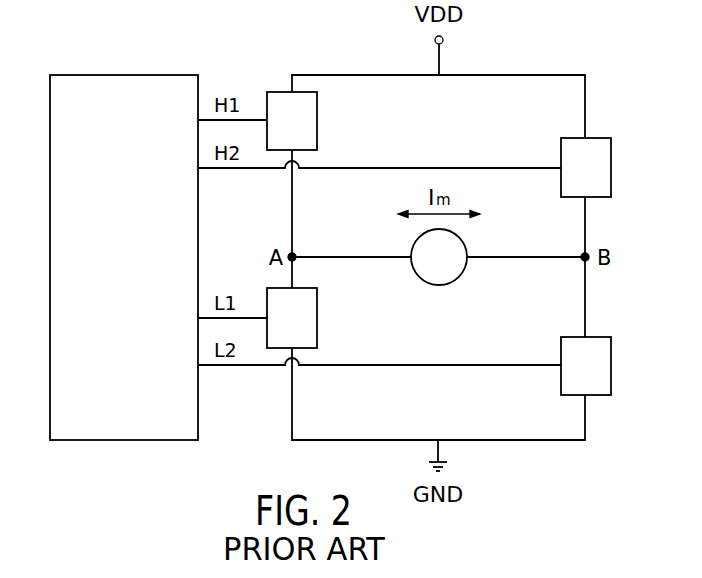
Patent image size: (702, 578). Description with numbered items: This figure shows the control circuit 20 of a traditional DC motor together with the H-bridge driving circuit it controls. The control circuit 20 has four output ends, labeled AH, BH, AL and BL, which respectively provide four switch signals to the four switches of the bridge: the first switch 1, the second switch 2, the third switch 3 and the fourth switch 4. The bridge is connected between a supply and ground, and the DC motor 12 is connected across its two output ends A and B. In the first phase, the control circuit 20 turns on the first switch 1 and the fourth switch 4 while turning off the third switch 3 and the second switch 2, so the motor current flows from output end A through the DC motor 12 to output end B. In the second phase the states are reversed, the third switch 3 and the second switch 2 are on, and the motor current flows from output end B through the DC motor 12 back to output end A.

The control circuit 20 is at (121, 75).
The DC motor 12 is at (438, 257).
The switch Q1 1 is at (292, 121).
The switch Q2 2 is at (586, 174).
The switch Q3 3 is at (292, 325).
The switch Q4 4 is at (586, 372).